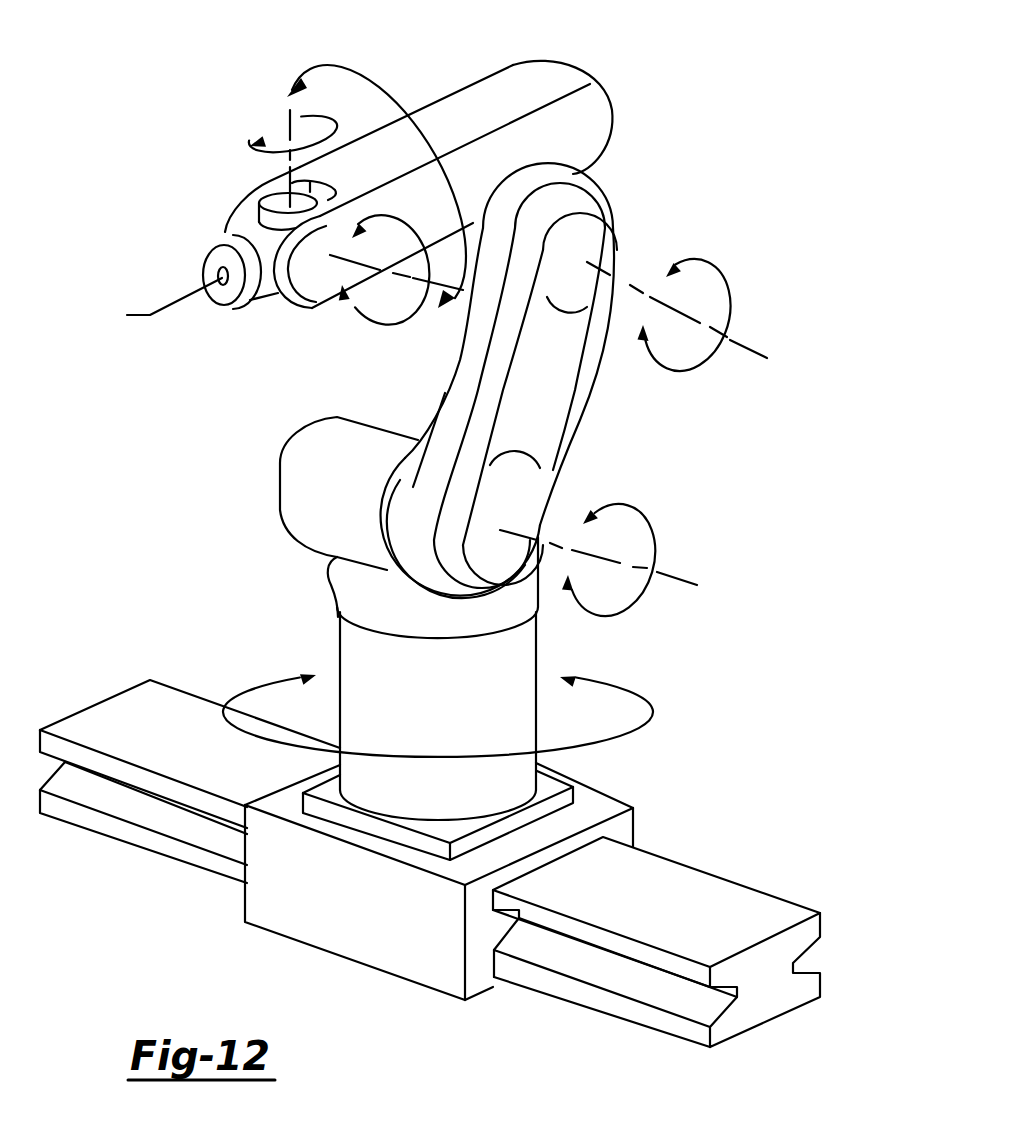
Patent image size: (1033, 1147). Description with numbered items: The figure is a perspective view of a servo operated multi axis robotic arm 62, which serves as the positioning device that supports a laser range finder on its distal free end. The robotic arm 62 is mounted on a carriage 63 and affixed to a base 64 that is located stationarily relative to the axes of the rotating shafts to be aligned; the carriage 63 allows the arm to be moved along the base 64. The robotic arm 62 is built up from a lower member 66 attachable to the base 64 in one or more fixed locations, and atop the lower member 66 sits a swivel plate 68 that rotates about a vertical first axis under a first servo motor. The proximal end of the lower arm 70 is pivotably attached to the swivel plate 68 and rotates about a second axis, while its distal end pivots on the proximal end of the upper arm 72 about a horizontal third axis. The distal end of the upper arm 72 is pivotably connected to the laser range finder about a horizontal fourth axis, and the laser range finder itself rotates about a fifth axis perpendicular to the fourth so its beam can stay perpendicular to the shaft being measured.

The multi axis robotic arm 62 is at (662, 163).
The upper arm 72 is at (455, 92).
The lower arm 70 is at (568, 407).
The swivel plate 68 is at (331, 583).
The lower member 66 is at (390, 796).
The carriage 63 is at (414, 953).
The base 64 is at (712, 874).